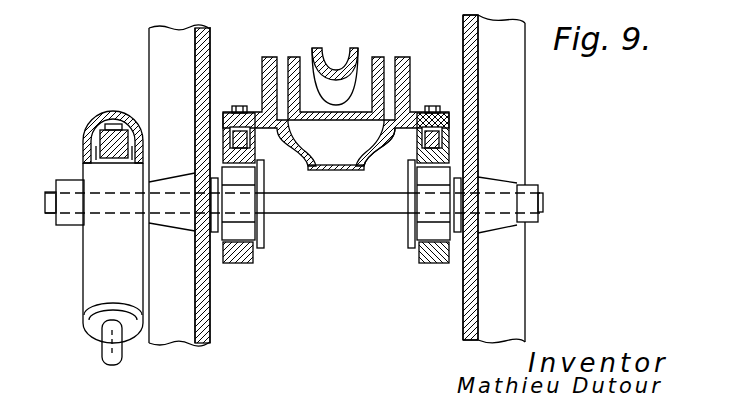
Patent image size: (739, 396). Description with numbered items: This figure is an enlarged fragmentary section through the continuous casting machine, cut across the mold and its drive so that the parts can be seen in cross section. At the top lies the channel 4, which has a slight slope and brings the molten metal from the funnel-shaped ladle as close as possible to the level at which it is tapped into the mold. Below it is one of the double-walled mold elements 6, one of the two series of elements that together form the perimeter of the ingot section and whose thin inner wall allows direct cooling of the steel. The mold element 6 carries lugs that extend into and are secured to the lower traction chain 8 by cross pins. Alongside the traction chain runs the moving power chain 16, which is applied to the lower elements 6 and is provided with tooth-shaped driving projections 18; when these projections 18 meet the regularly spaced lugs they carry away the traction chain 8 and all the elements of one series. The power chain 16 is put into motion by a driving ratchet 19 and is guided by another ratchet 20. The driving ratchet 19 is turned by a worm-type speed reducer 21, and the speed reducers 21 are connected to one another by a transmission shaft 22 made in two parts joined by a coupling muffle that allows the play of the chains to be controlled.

The channel 4 is at (335, 76).
The mold elements 6 is at (336, 113).
The lower traction chain 8 is at (415, 133).
The moving power chain 16 is at (256, 158).
The driving projections 18 is at (443, 138).
The driving ratchet 19 is at (113, 133).
The ratchet 20 is at (343, 207).
The speed reducer 21 is at (95, 270).
The transmission shaft 22 is at (117, 350).